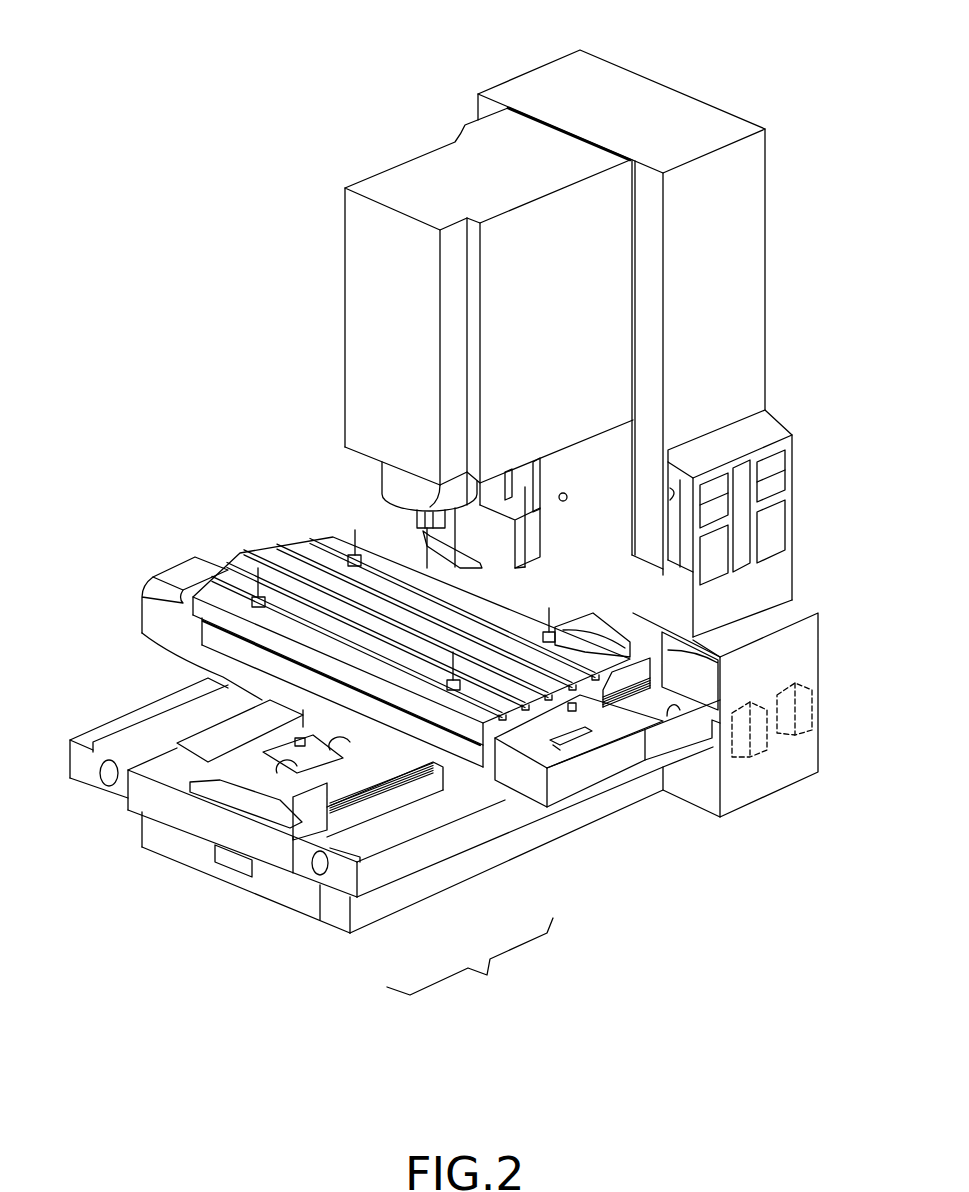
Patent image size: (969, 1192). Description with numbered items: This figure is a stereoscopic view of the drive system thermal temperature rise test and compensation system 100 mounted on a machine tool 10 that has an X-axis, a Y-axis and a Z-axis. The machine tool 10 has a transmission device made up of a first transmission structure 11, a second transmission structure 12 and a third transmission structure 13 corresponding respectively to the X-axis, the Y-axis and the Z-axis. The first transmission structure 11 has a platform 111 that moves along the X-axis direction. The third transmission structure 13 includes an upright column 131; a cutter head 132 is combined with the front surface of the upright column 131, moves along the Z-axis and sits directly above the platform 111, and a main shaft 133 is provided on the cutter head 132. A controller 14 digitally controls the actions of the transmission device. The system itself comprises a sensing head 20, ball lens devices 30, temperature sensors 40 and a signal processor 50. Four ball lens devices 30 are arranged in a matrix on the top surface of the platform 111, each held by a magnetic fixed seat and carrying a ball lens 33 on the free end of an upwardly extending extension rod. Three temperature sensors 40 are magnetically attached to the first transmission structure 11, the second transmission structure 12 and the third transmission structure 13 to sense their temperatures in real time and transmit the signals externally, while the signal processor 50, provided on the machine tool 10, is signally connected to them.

The drive system thermal temperature rise test and compensation system 100 is at (222, 36).
The machine tool 10 is at (284, 172).
The first transmission structure 11 is at (454, 775).
The second transmission structure 12 is at (385, 828).
The third transmission structure 13 is at (502, 537).
The controller 14 is at (748, 758).
The platform 111 is at (212, 593).
The upright column 131 is at (745, 188).
The cutter head 132 is at (390, 328).
The main shaft 133 is at (392, 480).
The sensing head 20 is at (337, 498).
The ball lens device 30 is at (231, 535).
The ball lens 33 is at (552, 608).
The temperature sensor 40 is at (566, 492).
The signal processor 50 is at (803, 733).